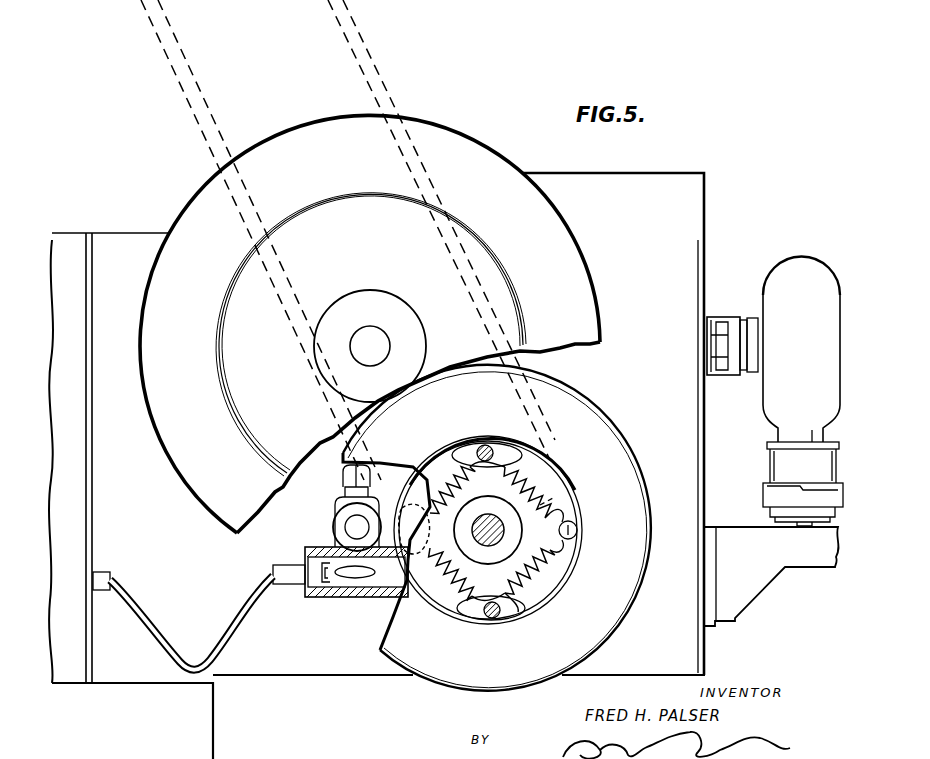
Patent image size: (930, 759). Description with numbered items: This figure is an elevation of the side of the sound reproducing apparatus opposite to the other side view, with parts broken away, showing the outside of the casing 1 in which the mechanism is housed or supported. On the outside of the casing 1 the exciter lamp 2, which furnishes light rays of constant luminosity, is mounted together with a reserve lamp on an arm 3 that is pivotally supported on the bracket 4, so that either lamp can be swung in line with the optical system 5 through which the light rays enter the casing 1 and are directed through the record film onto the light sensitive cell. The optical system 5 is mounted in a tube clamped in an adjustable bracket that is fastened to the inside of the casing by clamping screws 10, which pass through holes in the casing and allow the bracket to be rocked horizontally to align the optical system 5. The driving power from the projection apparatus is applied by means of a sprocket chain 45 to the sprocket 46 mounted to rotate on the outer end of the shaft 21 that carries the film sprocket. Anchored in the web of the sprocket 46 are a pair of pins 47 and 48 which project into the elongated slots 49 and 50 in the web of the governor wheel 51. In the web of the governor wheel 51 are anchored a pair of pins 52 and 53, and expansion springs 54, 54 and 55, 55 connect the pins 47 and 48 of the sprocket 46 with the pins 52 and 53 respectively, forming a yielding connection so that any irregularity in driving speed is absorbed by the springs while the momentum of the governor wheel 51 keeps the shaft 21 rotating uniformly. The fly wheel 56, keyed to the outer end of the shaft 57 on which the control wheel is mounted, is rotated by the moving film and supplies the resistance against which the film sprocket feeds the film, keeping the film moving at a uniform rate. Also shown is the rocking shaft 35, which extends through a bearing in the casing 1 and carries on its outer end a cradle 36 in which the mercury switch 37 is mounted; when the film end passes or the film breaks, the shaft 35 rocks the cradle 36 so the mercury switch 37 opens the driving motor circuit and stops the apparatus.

The casing 1 is at (706, 196).
The exciter lamp 2 is at (787, 264).
The arm 3 is at (765, 498).
The bracket 4 is at (800, 558).
The optical system 5 is at (724, 317).
The clamping screws 10 is at (704, 343).
The shaft 21 is at (500, 523).
The rocking shaft 35 is at (352, 525).
The cradle 36 is at (318, 552).
The mercury switch 37 is at (372, 590).
The sprocket chain 45 is at (384, 80).
The sprocket 46 is at (556, 498).
The pin 47 is at (486, 446).
The pin 48 is at (490, 618).
The elongated slot 49 is at (531, 448).
The elongated slot 50 is at (520, 612).
The governor wheel 51 is at (604, 420).
The pin 52 is at (402, 466).
The pin 53 is at (578, 530).
The expansion springs 54 is at (546, 482).
The expansion springs 55 is at (446, 470).
The fly wheel 56 is at (398, 316).
The shaft 57 is at (371, 340).